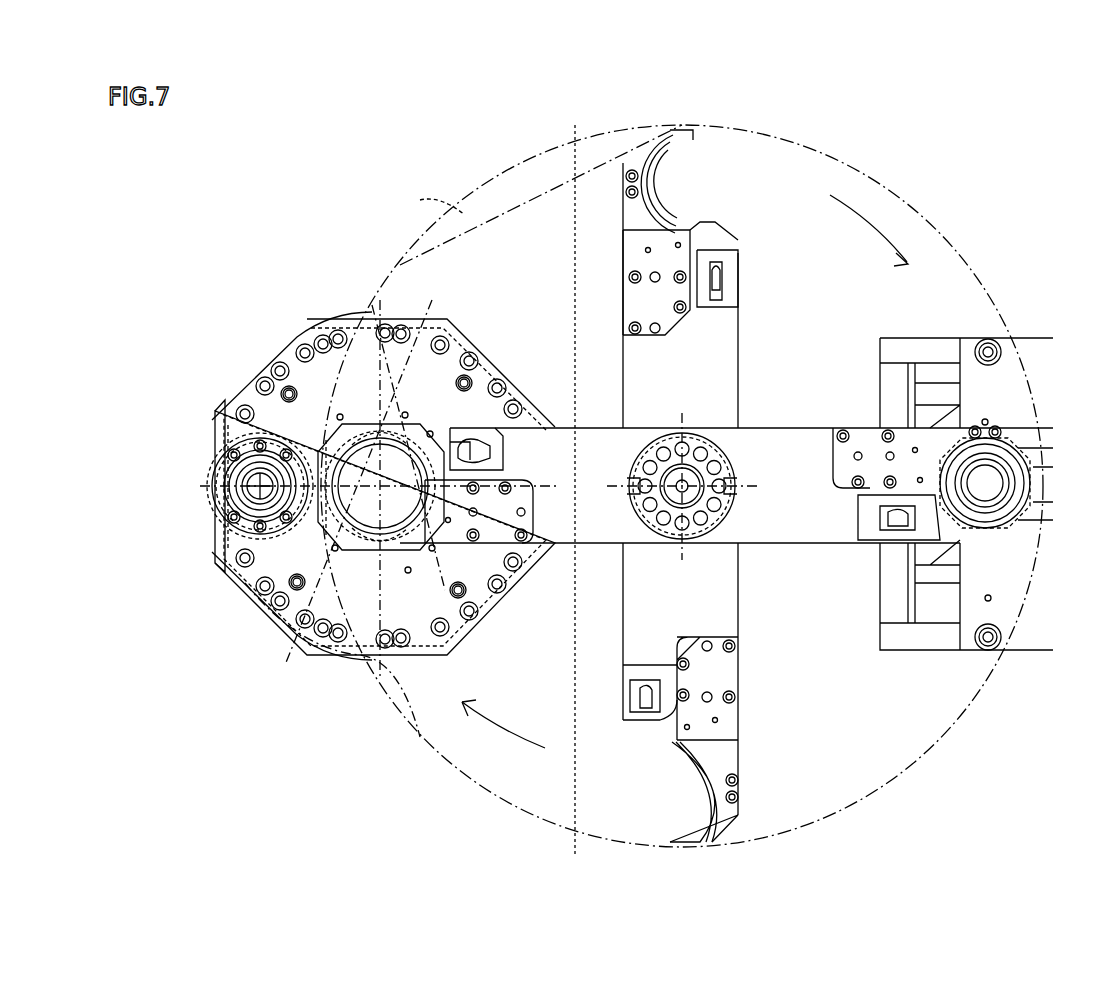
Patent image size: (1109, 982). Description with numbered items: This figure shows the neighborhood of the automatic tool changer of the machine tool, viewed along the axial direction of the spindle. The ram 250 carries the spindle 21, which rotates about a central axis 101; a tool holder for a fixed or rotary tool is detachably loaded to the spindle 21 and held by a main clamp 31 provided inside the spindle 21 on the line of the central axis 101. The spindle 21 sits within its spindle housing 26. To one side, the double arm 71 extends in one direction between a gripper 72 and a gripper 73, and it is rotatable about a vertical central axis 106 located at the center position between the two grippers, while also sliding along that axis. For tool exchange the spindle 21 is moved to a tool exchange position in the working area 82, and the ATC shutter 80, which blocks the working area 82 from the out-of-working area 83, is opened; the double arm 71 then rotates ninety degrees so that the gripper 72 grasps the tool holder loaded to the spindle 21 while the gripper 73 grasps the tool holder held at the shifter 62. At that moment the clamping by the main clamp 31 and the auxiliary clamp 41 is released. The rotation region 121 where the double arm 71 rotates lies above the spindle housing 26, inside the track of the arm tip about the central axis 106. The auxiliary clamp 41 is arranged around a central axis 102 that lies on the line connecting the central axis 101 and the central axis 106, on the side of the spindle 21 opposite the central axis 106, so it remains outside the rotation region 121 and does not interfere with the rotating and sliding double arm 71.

The spindle 21 is at (363, 322).
The spindle housing 26 is at (390, 264).
The main clamp 31 is at (300, 605).
The auxiliary clamp 41 is at (270, 533).
The shifter 62 is at (1035, 340).
The double arm 71 is at (722, 380).
The gripper 72 is at (395, 640).
The gripper 73 is at (637, 162).
The ATC shutter 80 is at (573, 195).
The working area 82 is at (493, 225).
The out-of-working area 83 is at (603, 182).
The central axis 101 is at (284, 336).
The central axis 102 is at (216, 497).
The central axis 106 is at (720, 518).
The rotation region 121 is at (447, 213).
The ram 250 is at (222, 400).